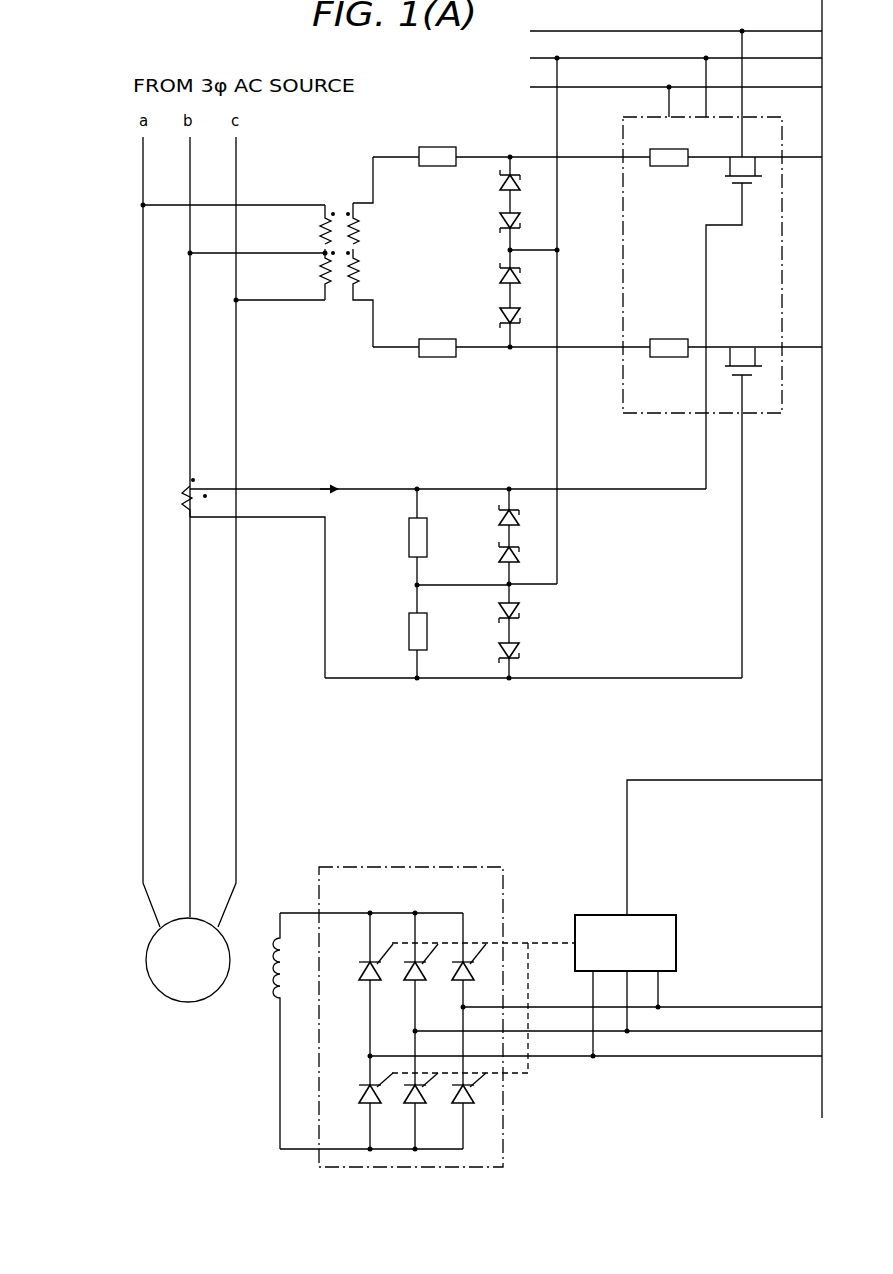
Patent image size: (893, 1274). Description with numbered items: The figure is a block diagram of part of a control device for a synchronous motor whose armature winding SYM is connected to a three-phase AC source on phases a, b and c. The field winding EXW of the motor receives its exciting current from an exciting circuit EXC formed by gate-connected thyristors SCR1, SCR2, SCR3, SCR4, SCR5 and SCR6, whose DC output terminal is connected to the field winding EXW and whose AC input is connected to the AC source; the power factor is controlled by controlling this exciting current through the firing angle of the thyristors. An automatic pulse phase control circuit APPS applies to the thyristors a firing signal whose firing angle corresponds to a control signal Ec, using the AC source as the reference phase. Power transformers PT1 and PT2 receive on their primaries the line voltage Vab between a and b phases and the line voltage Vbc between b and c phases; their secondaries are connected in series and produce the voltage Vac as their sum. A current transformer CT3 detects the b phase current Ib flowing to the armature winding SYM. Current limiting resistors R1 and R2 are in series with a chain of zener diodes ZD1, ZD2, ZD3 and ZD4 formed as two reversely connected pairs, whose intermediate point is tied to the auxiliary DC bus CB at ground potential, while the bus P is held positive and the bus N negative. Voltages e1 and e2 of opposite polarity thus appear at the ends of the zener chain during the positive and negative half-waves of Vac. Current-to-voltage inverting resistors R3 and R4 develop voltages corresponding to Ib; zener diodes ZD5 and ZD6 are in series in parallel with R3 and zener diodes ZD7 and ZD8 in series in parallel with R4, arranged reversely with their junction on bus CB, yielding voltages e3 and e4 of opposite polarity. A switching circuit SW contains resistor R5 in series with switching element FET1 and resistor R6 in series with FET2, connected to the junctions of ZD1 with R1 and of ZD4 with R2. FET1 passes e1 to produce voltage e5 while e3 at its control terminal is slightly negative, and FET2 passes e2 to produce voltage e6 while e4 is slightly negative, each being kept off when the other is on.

The power transformer PT1 is at (340, 208).
The power transformer PT2 is at (338, 290).
The current limiting resistor R1 is at (444, 147).
The current limiting resistor R2 is at (444, 339).
The current-to-voltage inverting resistor R3 is at (409, 553).
The current-to-voltage inverting resistor R4 is at (409, 620).
The resistor R5 is at (682, 166).
The resistor R6 is at (668, 339).
The zener diode ZD1 is at (498, 183).
The zener diode ZD2 is at (498, 223).
The zener diode ZD3 is at (498, 279).
The zener diode ZD4 is at (498, 316).
The zener diode ZD5 is at (498, 517).
The zener diode ZD6 is at (498, 556).
The zener diode ZD7 is at (498, 611).
The zener diode ZD8 is at (498, 652).
The switching element FET1 is at (734, 312).
The switching element FET2 is at (742, 502).
The switching circuit SW is at (702, 265).
The current transformer CT3 is at (192, 520).
The armature winding SYM is at (188, 960).
The field winding EXW is at (276, 978).
The exciting circuit EXC is at (396, 867).
The thyristor SCR1 is at (360, 977).
The thyristor SCR2 is at (425, 972).
The thyristor SCR3 is at (473, 972).
The thyristor SCR4 is at (360, 1100).
The thyristor SCR5 is at (424, 1096).
The thyristor SCR6 is at (470, 1104).
The automatic pulse phase control circuit APPS is at (625, 987).
The auxiliary DC power bus P is at (676, 82).
The auxiliary DC power bus CB is at (676, 77).
The auxiliary DC power bus N is at (676, 101).
The line voltage Vab is at (297, 209).
The line voltage Vbc is at (297, 257).
The AC voltage Vac is at (390, 343).
The b phase current Ib is at (448, 570).
The voltage e1 is at (540, 161).
The voltage e2 is at (540, 254).
The voltage e3 is at (538, 493).
The voltage e4 is at (538, 588).
The voltage e5 is at (798, 147).
The voltage e6 is at (798, 337).
The control signal Ec is at (724, 847).